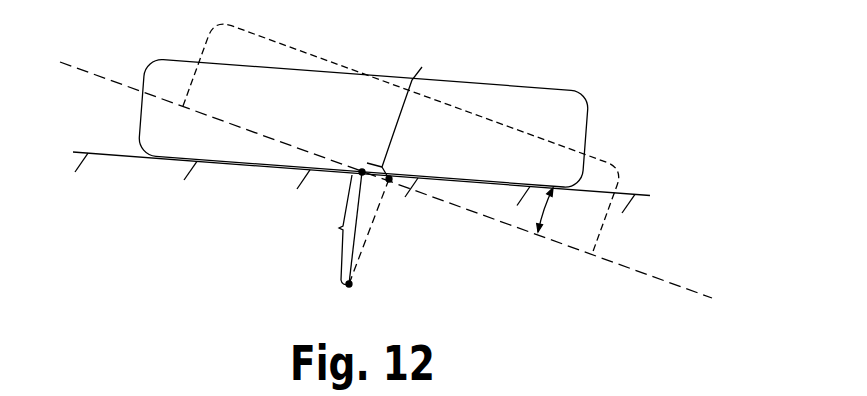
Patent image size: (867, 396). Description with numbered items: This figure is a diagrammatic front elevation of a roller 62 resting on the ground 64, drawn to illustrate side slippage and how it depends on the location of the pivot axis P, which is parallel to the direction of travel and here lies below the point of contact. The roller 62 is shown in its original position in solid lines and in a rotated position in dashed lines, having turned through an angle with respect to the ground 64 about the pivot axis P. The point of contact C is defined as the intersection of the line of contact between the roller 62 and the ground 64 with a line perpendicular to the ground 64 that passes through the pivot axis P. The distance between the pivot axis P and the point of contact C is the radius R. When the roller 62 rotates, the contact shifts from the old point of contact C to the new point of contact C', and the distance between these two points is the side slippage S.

The roller 62 is at (583, 102).
The ground 64 is at (643, 195).
The side slippage S is at (401, 112).
The point of contact C is at (352, 156).
The new point of contact C' is at (385, 214).
The pivot axis P is at (361, 240).
The distance between pivot axis and point of contact R is at (339, 228).